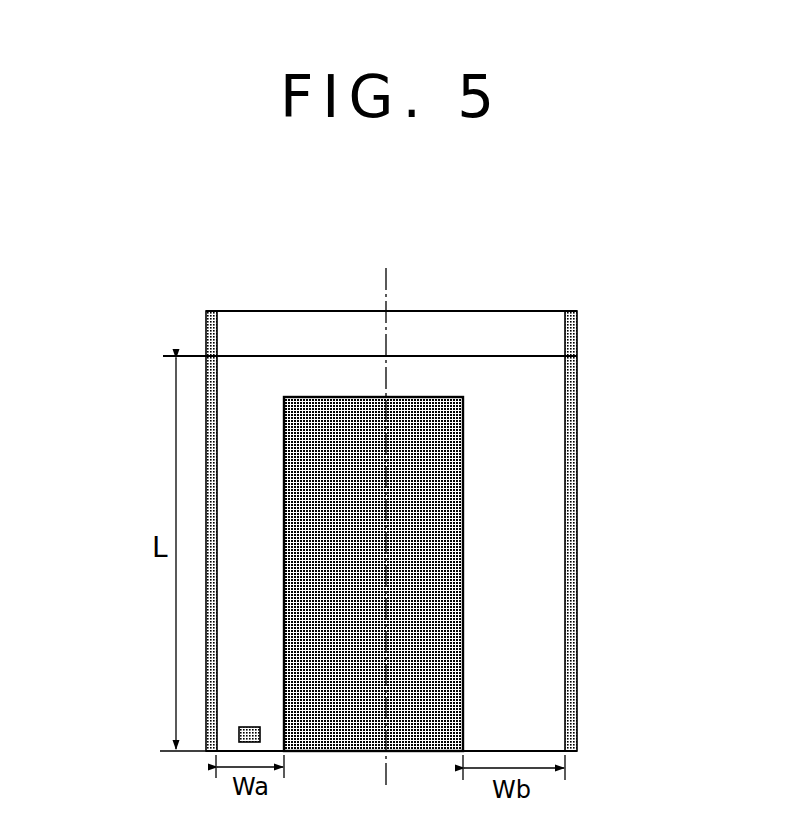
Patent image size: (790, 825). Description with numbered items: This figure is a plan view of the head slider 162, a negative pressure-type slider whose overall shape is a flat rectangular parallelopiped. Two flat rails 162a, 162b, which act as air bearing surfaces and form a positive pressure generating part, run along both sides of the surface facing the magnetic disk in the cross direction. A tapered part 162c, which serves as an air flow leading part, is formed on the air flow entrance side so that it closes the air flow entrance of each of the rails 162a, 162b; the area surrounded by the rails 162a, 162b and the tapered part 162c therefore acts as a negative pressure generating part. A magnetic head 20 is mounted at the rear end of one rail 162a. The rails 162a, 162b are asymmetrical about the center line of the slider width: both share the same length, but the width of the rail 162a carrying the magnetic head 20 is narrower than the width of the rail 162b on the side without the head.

The head slider 162 is at (338, 266).
The rail 162a is at (238, 465).
The rail 162b is at (535, 485).
The tapered part 162c is at (495, 328).
The magnetic head 20 is at (240, 728).